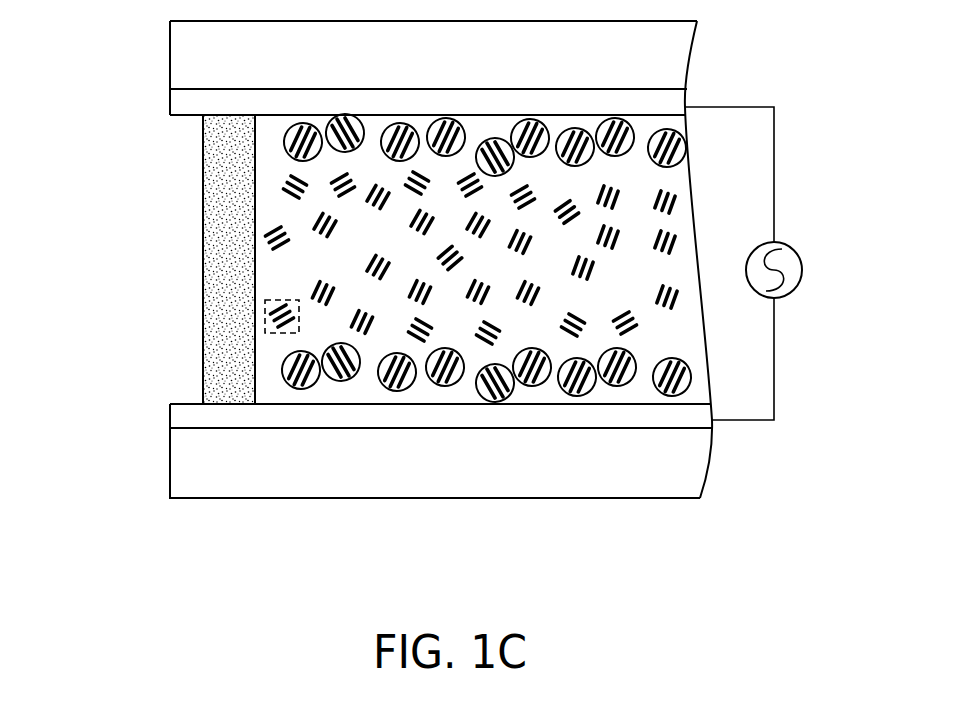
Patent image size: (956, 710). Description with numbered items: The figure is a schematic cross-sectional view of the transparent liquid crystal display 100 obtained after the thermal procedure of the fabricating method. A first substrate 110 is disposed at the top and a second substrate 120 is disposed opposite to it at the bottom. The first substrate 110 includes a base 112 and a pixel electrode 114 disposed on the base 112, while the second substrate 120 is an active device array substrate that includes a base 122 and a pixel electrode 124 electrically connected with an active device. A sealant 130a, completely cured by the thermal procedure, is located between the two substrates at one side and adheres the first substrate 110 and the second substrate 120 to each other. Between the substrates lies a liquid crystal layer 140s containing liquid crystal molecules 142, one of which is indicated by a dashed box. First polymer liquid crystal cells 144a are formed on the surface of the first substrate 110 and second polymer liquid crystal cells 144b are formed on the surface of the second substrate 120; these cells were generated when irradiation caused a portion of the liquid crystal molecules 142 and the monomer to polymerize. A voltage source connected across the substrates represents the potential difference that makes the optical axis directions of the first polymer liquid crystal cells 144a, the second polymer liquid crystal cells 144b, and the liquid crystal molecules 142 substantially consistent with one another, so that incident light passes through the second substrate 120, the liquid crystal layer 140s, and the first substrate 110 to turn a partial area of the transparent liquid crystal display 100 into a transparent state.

The transparent liquid crystal display 100 is at (746, 581).
The first substrate 110 is at (371, 69).
The base 112 is at (193, 50).
The pixel electrode 114 is at (193, 100).
The second substrate 120 is at (377, 446).
The base 122 is at (193, 460).
The pixel electrode 124 is at (193, 410).
The sealant 130a is at (225, 172).
The liquid crystal layer 140s is at (698, 187).
The liquid crystal molecules 142 is at (265, 313).
The first polymer liquid crystal cells 144a is at (283, 140).
The second polymer liquid crystal cells 144b is at (282, 370).